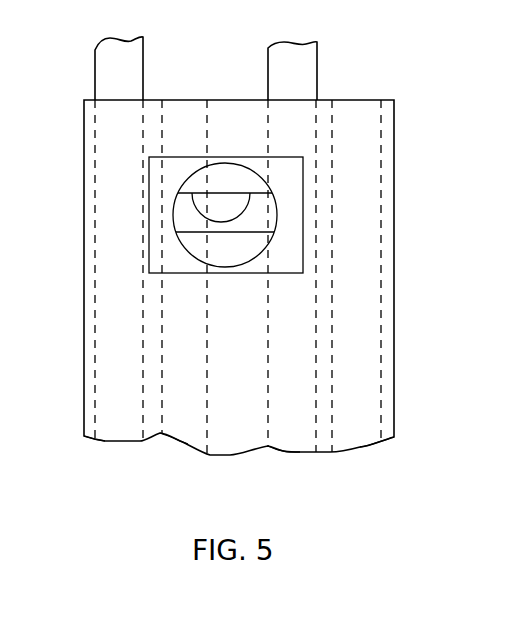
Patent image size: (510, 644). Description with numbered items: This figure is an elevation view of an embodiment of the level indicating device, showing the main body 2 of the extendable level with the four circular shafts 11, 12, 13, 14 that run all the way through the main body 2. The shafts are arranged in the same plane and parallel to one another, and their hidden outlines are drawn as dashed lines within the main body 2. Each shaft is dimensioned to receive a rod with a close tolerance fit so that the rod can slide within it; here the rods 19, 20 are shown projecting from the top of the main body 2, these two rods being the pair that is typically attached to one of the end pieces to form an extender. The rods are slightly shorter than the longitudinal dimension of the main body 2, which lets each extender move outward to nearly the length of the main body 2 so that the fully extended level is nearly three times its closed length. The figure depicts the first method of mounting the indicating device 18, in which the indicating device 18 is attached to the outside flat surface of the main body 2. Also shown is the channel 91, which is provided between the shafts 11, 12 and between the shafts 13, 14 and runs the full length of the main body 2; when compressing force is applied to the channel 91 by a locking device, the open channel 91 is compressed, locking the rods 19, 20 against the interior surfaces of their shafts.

The main body 2 is at (394, 130).
The rod 20 is at (94, 63).
The rod 19 is at (318, 55).
The indicating device 18 is at (252, 208).
The channel 91 is at (150, 352).
The circular shaft 14 is at (115, 443).
The circular shaft 13 is at (178, 443).
The circular shaft 12 is at (288, 447).
The circular shaft 11 is at (360, 440).